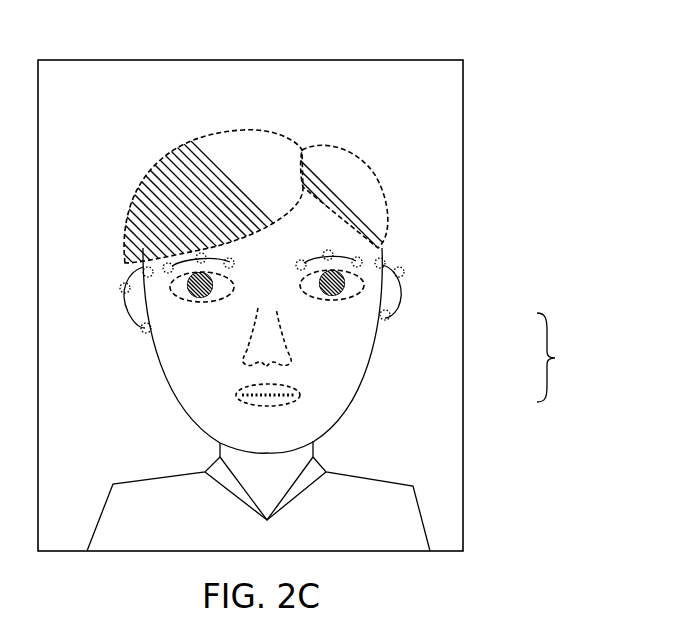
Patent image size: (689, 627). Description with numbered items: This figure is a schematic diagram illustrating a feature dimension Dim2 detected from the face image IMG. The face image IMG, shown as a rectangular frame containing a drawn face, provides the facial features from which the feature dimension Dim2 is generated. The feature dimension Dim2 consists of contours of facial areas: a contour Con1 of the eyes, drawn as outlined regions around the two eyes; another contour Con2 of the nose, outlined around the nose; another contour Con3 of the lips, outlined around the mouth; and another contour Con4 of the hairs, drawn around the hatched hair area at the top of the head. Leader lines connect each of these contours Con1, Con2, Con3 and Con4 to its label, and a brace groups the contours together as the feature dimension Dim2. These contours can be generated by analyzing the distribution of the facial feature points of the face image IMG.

The face image IMG is at (348, 60).
The contour of the hairs Con4 is at (390, 220).
The contour of the eyes Con1 is at (234, 290).
The contour of the nose Con2 is at (284, 337).
The contour of the lips Con3 is at (300, 390).
The feature dimension Dim2 is at (572, 357).